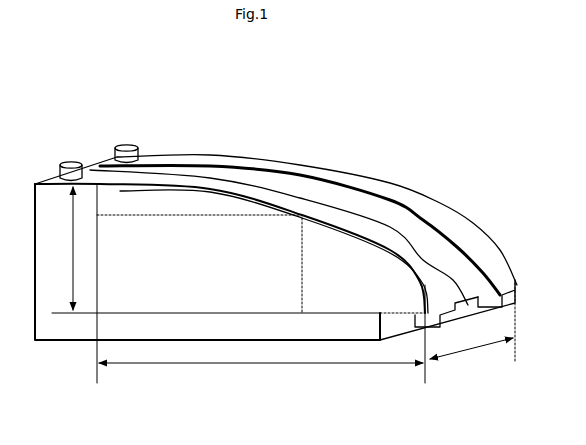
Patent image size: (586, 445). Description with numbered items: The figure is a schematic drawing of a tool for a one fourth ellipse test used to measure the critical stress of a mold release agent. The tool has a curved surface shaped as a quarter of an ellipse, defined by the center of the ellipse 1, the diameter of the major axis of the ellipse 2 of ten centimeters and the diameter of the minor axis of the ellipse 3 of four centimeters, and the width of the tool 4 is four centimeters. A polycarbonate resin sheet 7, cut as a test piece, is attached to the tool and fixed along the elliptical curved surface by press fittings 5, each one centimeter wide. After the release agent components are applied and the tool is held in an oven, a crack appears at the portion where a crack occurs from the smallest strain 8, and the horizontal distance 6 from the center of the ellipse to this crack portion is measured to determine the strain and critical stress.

The center of ellipse 1 is at (97, 313).
The diameter of major axis of ellipse 2 is at (261, 374).
The diameter of minor axis of ellipse 3 is at (64, 248).
The width of tool 4 is at (472, 330).
The press fittings 5 is at (432, 272).
The horizontal distance from center of ellipse to crack portion 6 is at (261, 283).
The polycarbonate resin sheet 7 is at (317, 188).
The portion where a crack occurs from the smallest strain 8 is at (302, 216).